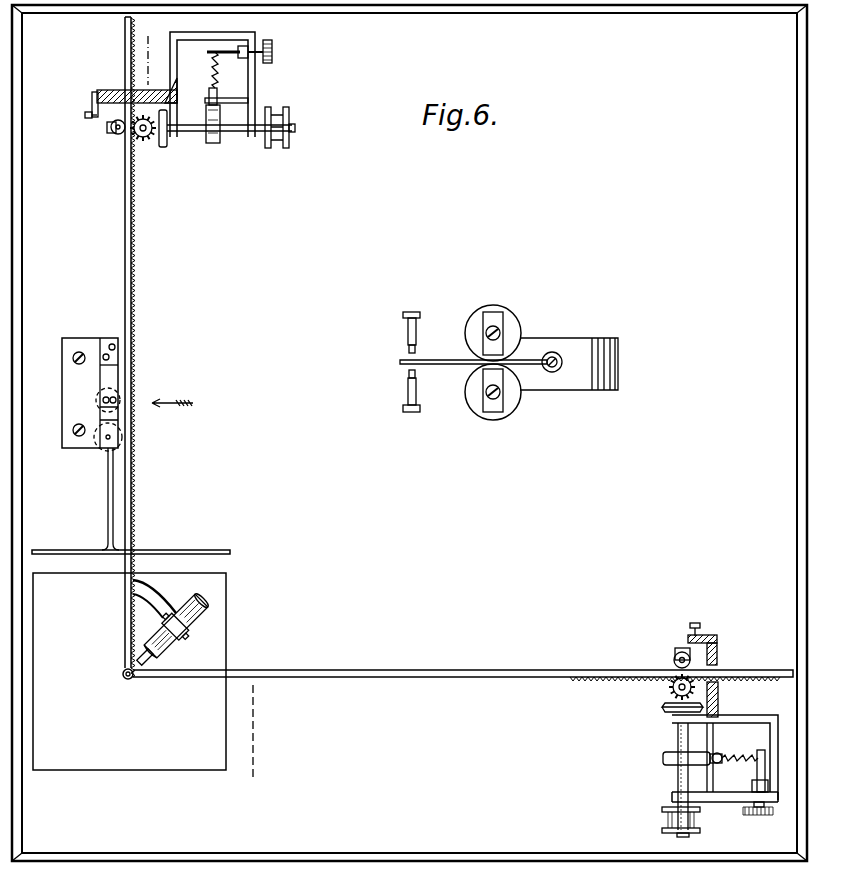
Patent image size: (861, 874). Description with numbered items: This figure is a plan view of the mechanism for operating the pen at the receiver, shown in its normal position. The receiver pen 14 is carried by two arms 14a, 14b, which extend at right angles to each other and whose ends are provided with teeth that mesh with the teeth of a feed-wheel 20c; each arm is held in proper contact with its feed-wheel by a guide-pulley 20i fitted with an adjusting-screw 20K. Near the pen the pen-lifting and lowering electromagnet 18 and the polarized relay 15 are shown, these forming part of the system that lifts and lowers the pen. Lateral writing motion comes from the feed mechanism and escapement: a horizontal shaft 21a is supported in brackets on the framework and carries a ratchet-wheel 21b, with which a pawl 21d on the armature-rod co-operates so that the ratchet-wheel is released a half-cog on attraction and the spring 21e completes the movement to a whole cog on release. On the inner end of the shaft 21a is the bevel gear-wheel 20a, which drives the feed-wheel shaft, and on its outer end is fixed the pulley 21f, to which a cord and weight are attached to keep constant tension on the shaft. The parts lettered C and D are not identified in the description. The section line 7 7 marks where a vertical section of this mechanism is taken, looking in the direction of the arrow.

The section line 7 7 is at (198, 412).
The receiver pen 14 is at (171, 627).
The arm 14a is at (125, 270).
The arm 14b is at (395, 663).
The polarized relay 15 is at (509, 363).
The pen-lifting and lowering electromagnet 18 is at (77, 394).
The adjusting-screw 20K is at (712, 619).
The guide-pulley 20i is at (675, 655).
The feed-wheel 20c is at (147, 137).
The bevel gear-wheel 20a is at (168, 143).
The spring 21e is at (214, 65).
The ratchet-wheel 21b is at (663, 754).
The pawl 21d is at (706, 756).
The horizontal shaft 21a is at (678, 785).
The pulley 21f is at (696, 818).
The bracket C is at (415, 389).
The drum D is at (459, 435).